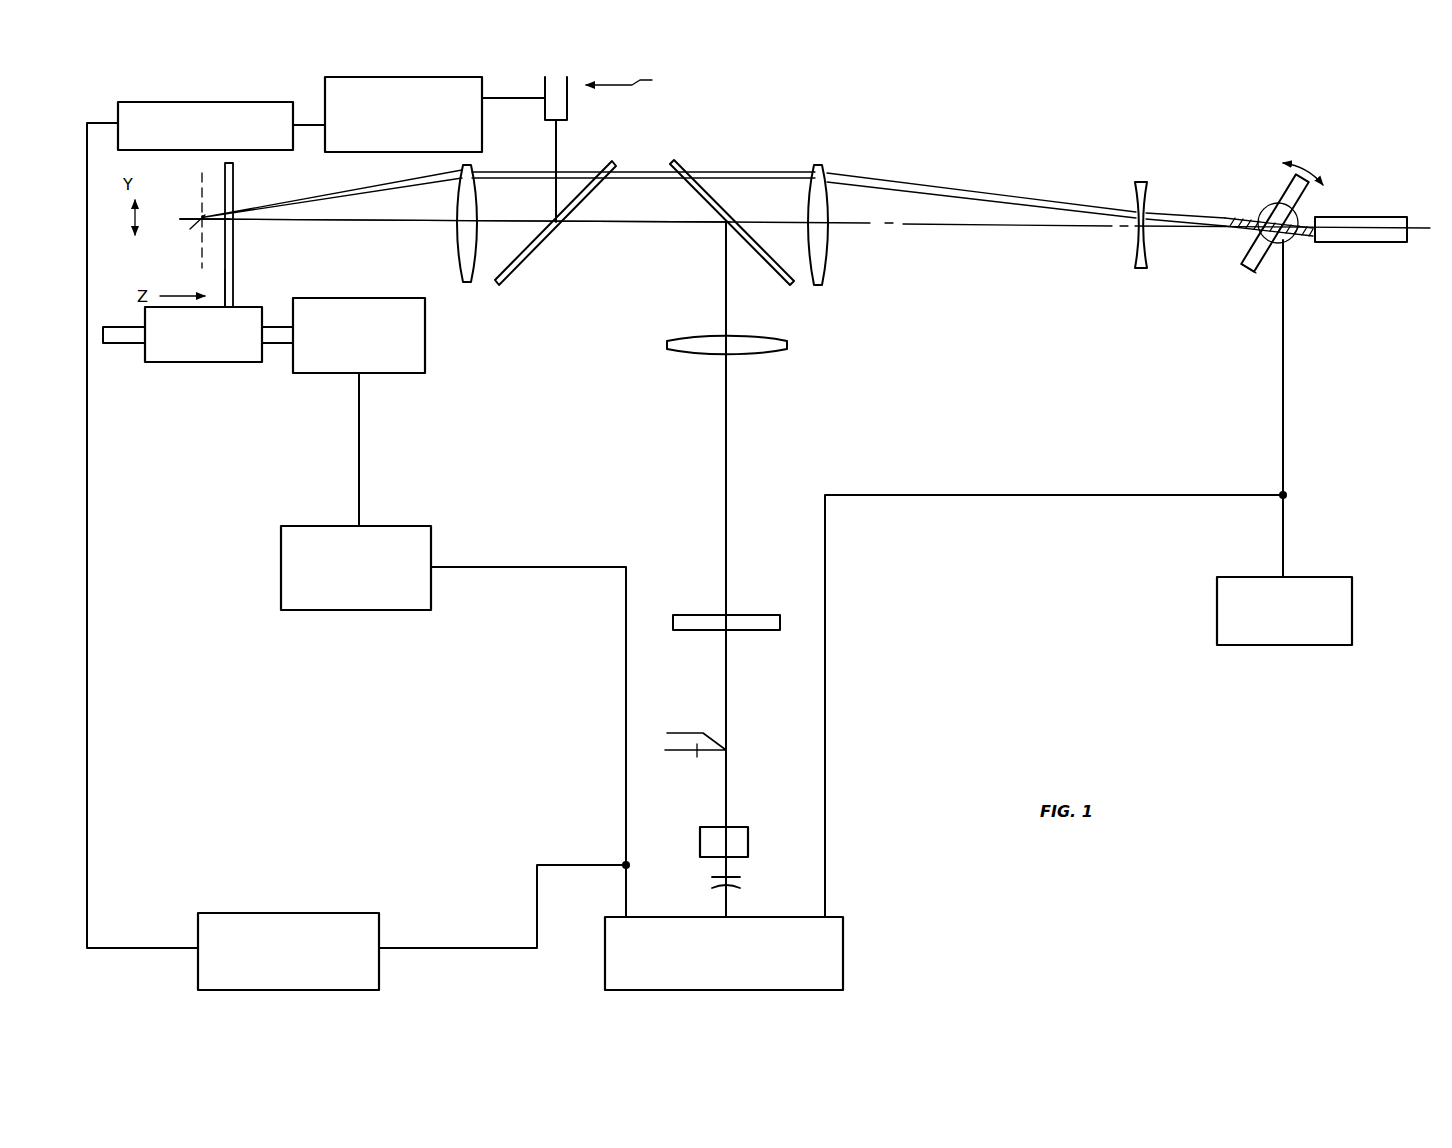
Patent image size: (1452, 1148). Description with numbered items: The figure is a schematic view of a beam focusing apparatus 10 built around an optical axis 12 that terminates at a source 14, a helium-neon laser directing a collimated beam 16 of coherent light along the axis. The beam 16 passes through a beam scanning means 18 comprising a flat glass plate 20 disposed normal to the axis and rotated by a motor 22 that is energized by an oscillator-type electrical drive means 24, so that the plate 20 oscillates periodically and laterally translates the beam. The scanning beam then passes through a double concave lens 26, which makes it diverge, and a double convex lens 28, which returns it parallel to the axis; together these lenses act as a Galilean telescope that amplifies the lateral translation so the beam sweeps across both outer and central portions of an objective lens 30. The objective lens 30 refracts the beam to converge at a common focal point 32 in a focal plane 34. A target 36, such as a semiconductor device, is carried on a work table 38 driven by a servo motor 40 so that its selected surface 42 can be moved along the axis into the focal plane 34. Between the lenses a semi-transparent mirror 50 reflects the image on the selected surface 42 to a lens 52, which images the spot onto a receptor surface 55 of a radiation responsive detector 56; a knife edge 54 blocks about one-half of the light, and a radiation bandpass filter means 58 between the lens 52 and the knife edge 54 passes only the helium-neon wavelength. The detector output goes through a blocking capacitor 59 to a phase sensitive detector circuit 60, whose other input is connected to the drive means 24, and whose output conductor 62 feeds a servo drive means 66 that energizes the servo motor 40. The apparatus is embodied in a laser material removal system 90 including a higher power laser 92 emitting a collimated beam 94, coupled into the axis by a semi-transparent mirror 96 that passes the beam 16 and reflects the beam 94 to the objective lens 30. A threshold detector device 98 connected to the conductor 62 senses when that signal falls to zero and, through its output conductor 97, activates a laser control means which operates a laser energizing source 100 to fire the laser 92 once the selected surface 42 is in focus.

The beam focusing apparatus 10 is at (1345, 280).
The optical axis 12 is at (660, 225).
The source of electromagnetic radiation 14 is at (1352, 242).
The collimated beam 16 is at (637, 172).
The beam scanning means 18 is at (1252, 237).
The plate 20 is at (1264, 274).
The motor 22 is at (1269, 205).
The electrical drive means 24 is at (1352, 597).
The double concave lens 26 is at (1133, 263).
The double convex lens 28 is at (828, 272).
The objective lens 30 is at (458, 254).
The focal point 32 is at (192, 226).
The focal plane 34 is at (198, 208).
The target 36 is at (237, 198).
The work table 38 is at (167, 364).
The servo motor 40 is at (395, 376).
The selected surface 42 is at (233, 276).
The semi-transparent mirror 50 is at (713, 200).
The lens 52 is at (758, 354).
The knife edge 54 is at (697, 757).
The receptor surface 55 is at (716, 825).
The radiation responsive detector 56 is at (748, 832).
The radiation bandpass filter means 58 is at (752, 610).
The blocking capacitor 59 is at (735, 879).
The phase sensitive detector circuit 60 is at (843, 971).
The output conductor 62 is at (622, 760).
The servo drive means 66 is at (401, 608).
The laser material removal system 90 is at (641, 85).
The laser 92 is at (568, 102).
The collimated beam 94 is at (556, 145).
The semi-transparent mirror 96 is at (512, 275).
The output conductor 97 is at (87, 482).
The threshold detector device 98 is at (160, 84).
The laser energizing source 100 is at (378, 153).